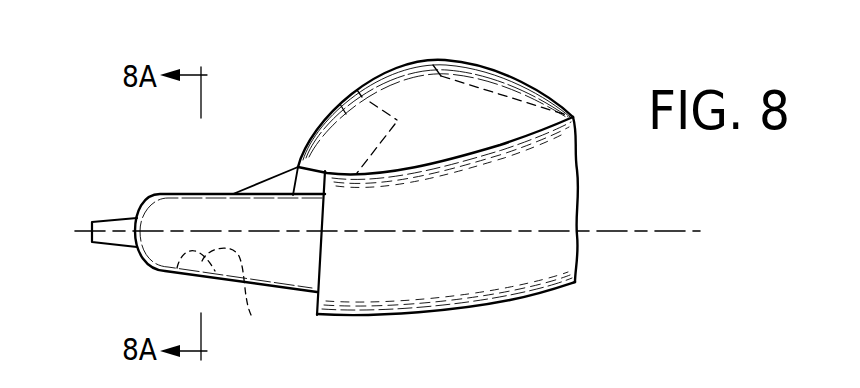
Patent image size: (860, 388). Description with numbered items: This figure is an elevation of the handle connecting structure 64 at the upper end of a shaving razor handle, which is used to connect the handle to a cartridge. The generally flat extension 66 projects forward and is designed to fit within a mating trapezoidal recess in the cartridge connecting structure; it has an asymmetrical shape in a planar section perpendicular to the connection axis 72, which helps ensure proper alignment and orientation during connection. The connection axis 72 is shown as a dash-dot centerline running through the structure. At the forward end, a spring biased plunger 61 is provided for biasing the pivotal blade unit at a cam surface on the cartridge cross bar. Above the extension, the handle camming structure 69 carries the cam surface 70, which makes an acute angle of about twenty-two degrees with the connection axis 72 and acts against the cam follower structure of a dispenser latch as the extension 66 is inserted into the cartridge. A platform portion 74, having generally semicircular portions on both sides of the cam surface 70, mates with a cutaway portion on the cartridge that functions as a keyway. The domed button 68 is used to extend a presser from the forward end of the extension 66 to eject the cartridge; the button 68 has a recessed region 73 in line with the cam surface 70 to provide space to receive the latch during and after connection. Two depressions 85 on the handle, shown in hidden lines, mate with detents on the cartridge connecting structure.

The spring biased plunger 61 is at (102, 222).
The handle connecting structure 64 is at (582, 301).
The extension 66 is at (157, 193).
The button 68 is at (413, 62).
The handle camming structure 69 is at (267, 148).
The cam surface 70 is at (263, 181).
The connection axis 72 is at (645, 235).
The recessed region 73 is at (339, 100).
The platform portion 74 is at (298, 167).
The depressions 85 is at (230, 298).